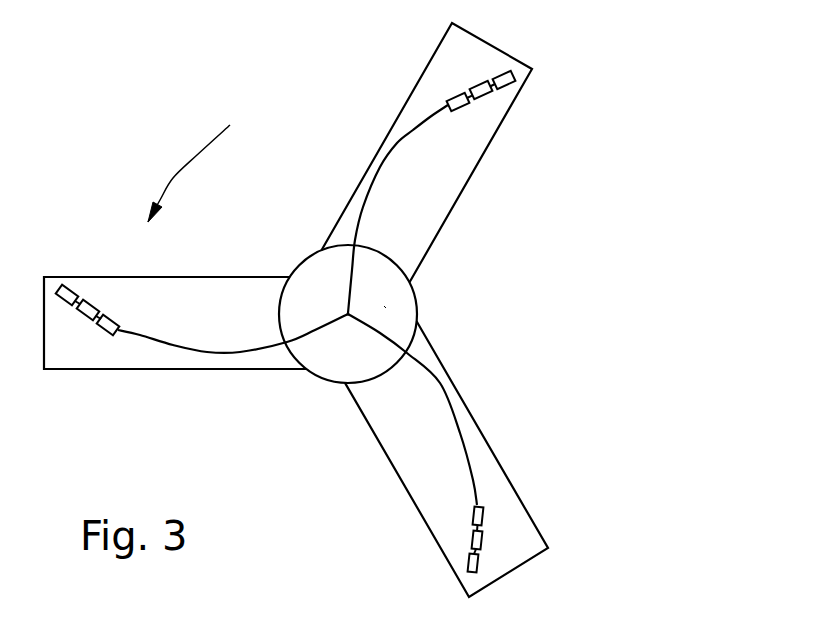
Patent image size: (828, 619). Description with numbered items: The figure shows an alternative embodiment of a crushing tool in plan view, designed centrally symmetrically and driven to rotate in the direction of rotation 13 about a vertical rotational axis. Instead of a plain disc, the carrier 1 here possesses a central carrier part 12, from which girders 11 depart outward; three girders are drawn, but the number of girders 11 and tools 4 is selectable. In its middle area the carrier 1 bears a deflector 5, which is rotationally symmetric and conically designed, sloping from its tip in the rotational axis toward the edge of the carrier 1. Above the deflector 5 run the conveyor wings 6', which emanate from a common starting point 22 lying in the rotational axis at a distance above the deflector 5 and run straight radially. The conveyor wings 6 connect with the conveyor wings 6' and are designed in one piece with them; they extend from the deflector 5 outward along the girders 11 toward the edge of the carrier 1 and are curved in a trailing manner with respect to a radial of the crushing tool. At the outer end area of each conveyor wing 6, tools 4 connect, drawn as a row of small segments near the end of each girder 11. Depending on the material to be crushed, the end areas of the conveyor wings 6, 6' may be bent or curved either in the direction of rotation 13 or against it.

The carrier 1 is at (453, 326).
The tools 4 is at (473, 542).
The deflector 5 is at (317, 290).
The conveyor wings 6 is at (388, 298).
The conveyor wings 6' is at (233, 384).
The girders 11 is at (423, 162).
The central carrier part 12 is at (385, 307).
The direction of rotation 13 is at (175, 178).
The starting point 22 is at (349, 312).